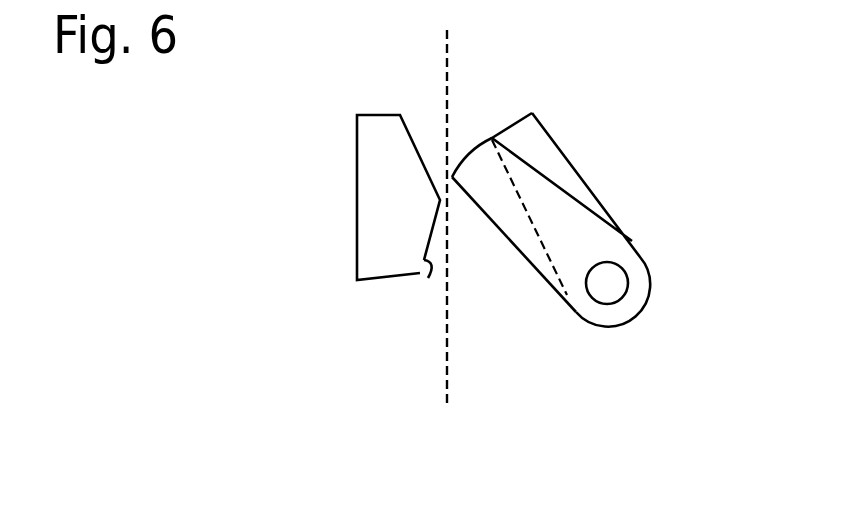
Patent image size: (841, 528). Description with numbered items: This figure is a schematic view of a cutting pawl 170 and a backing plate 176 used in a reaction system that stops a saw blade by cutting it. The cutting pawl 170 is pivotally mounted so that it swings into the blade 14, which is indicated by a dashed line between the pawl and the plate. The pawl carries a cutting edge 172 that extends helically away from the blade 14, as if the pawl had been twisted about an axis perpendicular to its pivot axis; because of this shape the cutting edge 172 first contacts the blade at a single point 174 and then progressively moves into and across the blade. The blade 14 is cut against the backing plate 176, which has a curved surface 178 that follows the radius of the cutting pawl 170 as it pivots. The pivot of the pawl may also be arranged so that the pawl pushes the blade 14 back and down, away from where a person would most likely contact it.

The blade 14 is at (445, 82).
The cutting pawl 170 is at (550, 153).
The cutting edge 172 is at (481, 138).
The point of first contact 174 is at (452, 177).
The backing plate 176 is at (368, 162).
The curved surface 178 is at (428, 278).